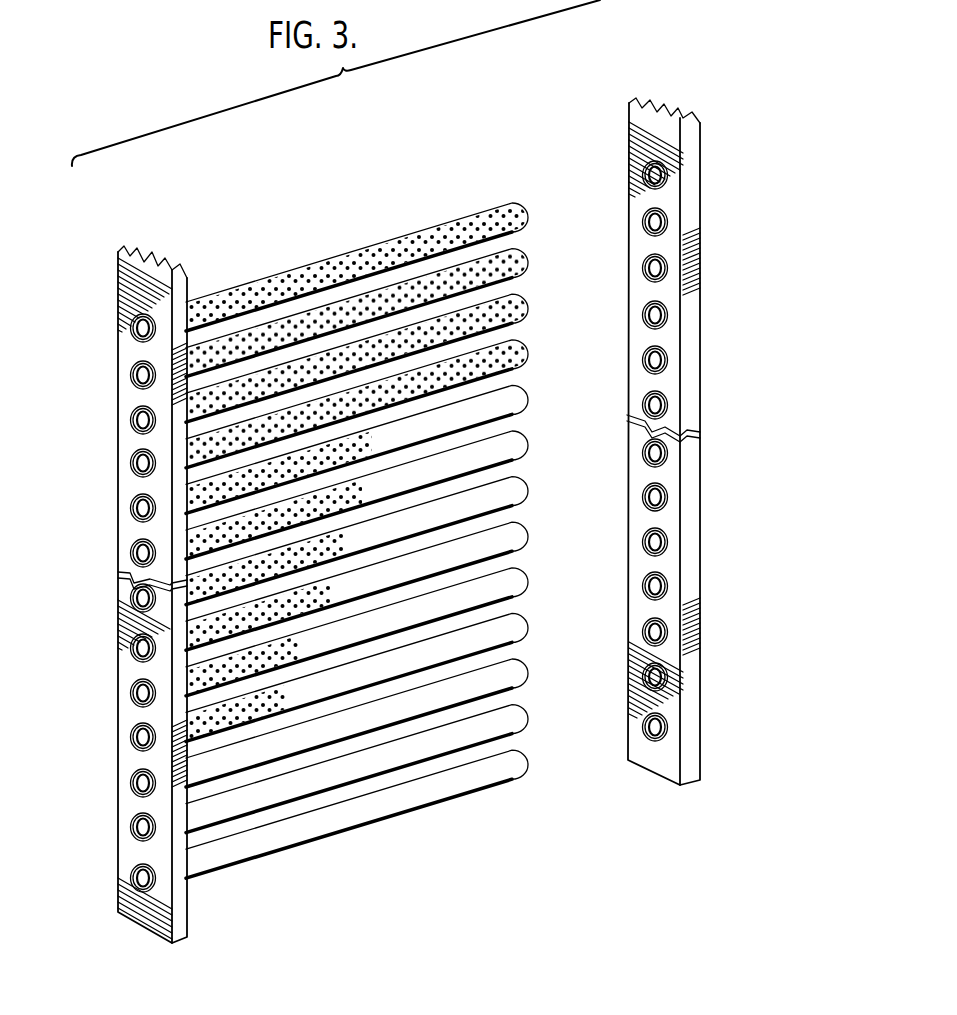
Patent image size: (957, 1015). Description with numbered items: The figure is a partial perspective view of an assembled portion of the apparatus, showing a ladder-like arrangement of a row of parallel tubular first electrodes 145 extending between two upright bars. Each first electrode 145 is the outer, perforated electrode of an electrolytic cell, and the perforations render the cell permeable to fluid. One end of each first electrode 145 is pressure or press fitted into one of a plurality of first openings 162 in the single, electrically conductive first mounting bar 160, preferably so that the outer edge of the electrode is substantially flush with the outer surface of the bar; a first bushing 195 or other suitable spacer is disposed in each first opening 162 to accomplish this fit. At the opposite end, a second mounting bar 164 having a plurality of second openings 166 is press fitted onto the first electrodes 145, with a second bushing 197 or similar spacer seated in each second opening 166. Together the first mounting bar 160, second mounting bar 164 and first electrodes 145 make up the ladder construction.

The first electrode 145 is at (396, 818).
The first mounting bar 160 is at (116, 316).
The first opening 162 is at (130, 458).
The second mounting bar 164 is at (697, 168).
The second opening 166 is at (667, 318).
The first bushing 195 is at (132, 366).
The second bushing 197 is at (668, 405).